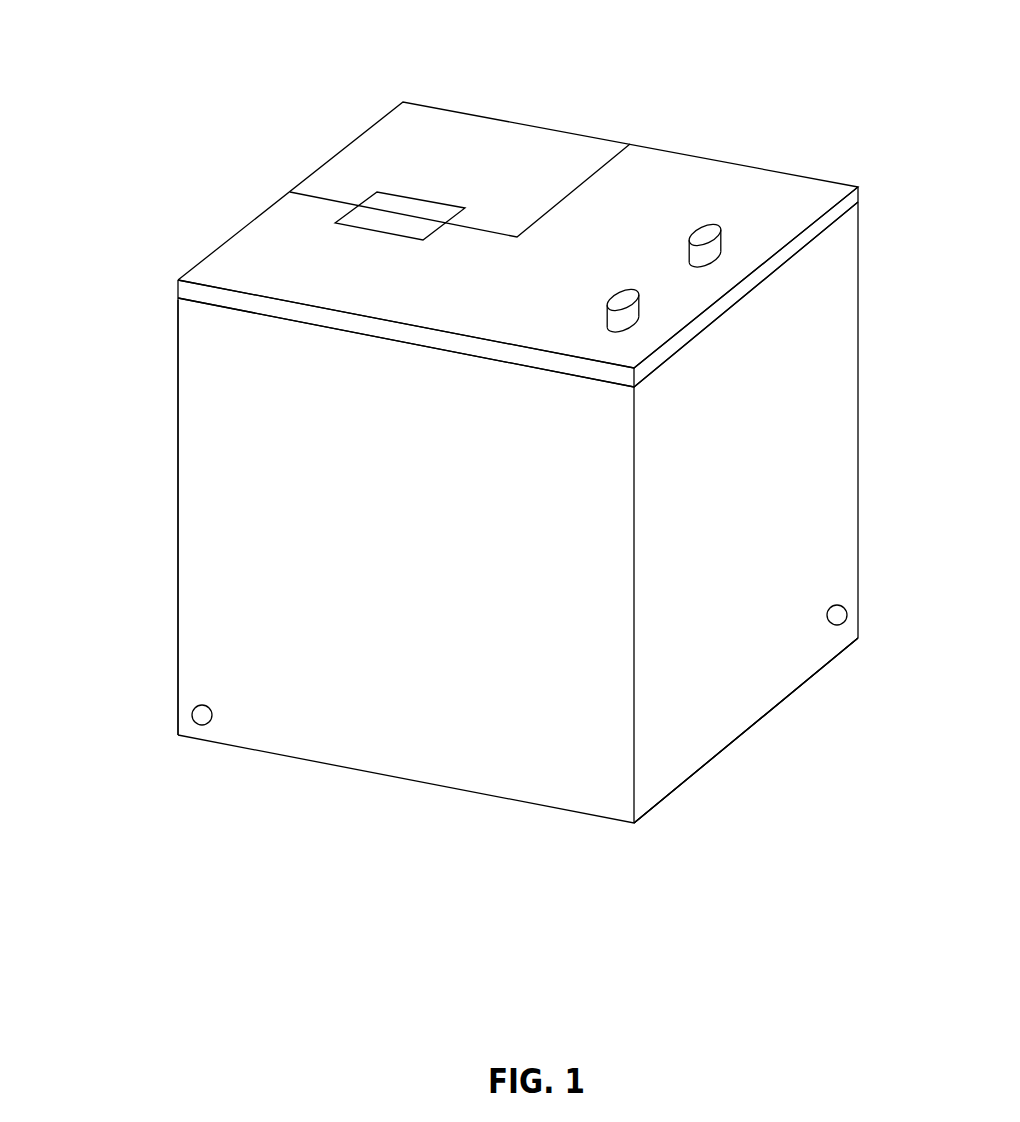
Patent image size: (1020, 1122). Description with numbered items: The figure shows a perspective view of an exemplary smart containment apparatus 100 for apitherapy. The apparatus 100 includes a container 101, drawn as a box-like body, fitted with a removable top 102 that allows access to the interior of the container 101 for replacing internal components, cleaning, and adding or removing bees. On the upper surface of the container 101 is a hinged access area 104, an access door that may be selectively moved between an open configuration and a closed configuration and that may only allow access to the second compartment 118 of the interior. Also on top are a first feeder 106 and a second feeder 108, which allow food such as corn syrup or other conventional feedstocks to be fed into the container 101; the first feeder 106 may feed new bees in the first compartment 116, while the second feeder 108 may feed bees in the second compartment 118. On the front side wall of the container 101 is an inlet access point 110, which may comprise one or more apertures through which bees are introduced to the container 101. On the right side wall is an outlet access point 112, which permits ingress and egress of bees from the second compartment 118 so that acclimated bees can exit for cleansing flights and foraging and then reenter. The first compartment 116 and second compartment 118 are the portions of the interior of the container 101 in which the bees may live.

The apparatus 100 is at (815, 134).
The container 101 is at (175, 425).
The removable top 102 is at (188, 290).
The hinged access area 104 is at (504, 158).
The first feeder 106 is at (617, 299).
The second feeder 108 is at (692, 234).
The inlet access point 110 is at (201, 726).
The outlet access point 112 is at (837, 626).
The first compartment 116 is at (712, 770).
The second compartment 118 is at (808, 689).